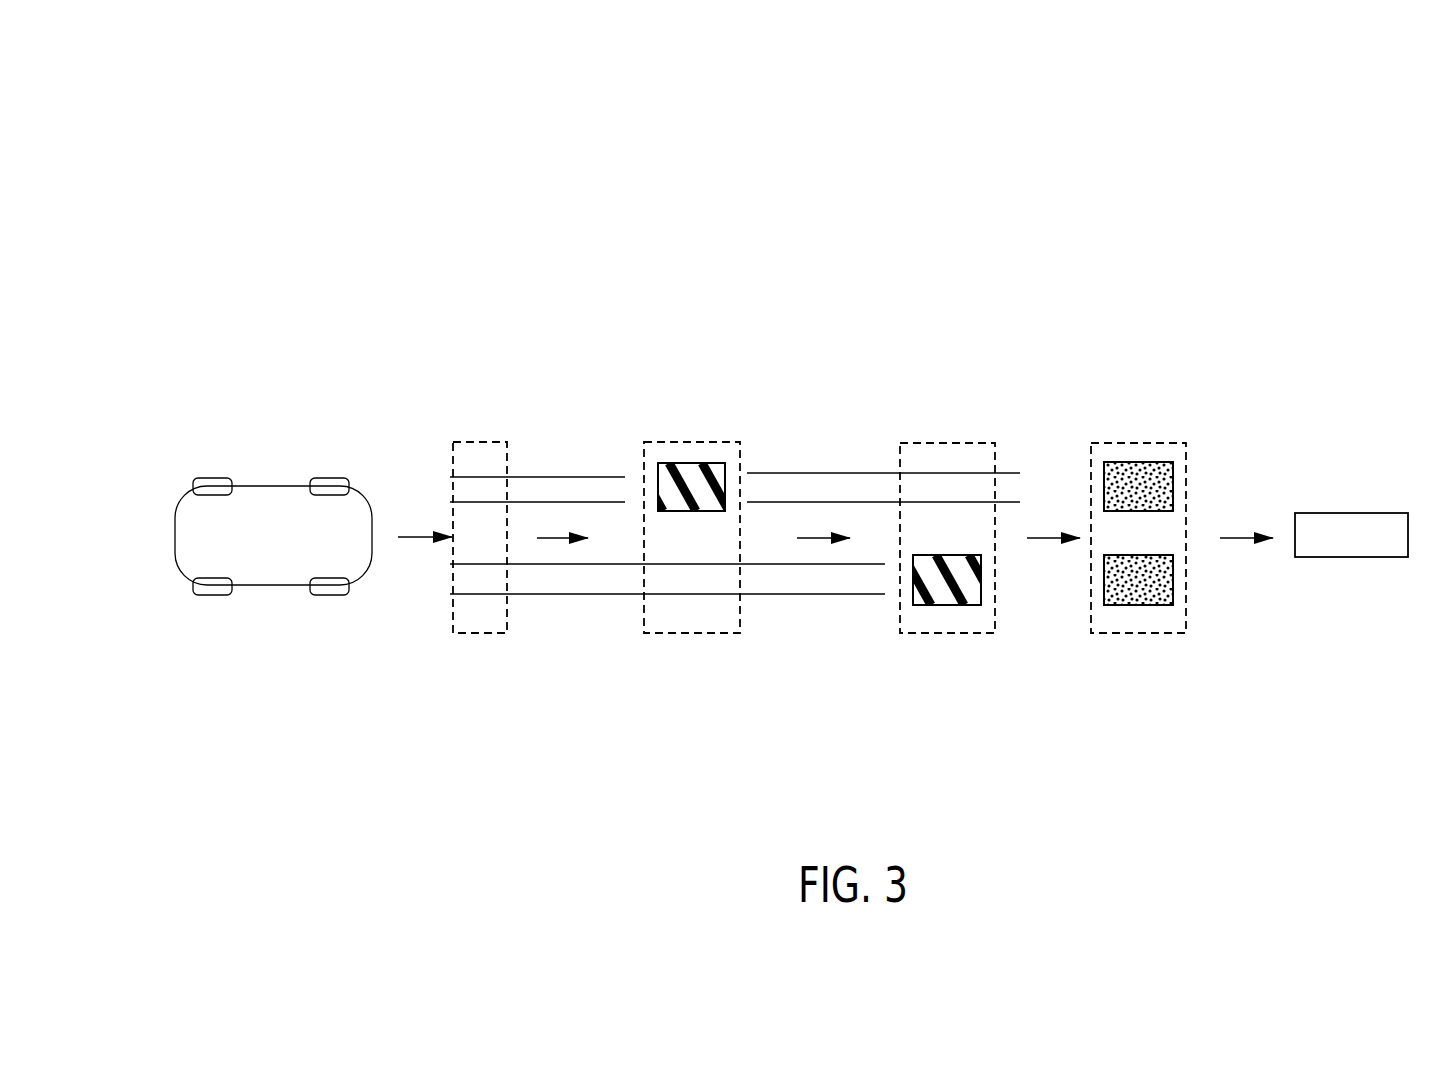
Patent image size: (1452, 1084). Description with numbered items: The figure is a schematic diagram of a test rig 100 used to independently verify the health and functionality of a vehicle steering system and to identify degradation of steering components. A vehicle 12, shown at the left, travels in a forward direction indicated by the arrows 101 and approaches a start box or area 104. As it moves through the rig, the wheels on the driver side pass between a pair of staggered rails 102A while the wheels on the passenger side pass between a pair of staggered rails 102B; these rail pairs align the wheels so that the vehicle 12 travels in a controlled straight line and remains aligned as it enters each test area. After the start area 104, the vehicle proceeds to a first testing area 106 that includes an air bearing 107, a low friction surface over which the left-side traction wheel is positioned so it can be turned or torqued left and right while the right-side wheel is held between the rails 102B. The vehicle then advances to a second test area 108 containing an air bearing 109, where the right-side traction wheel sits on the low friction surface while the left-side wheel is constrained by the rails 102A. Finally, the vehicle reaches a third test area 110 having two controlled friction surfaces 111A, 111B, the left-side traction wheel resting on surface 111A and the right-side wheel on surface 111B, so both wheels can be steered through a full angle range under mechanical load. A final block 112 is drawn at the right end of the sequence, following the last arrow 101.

The test rig 100 is at (1258, 170).
The vehicle 12 is at (262, 486).
The arrows indicating forward direction 101 is at (415, 537).
The start box or area 104 is at (487, 442).
The staggered rails (left side) 102A is at (565, 476).
The staggered rails (right side) 102B is at (578, 596).
The first testing area 106 is at (678, 438).
The air bearing 107 is at (673, 512).
The second test area 108 is at (942, 437).
The air bearing 109 is at (958, 555).
The third test area 110 is at (1143, 440).
The controlled friction surface 111A is at (1175, 487).
The controlled friction surface 111B is at (1138, 607).
The output / final product 112 is at (1385, 513).